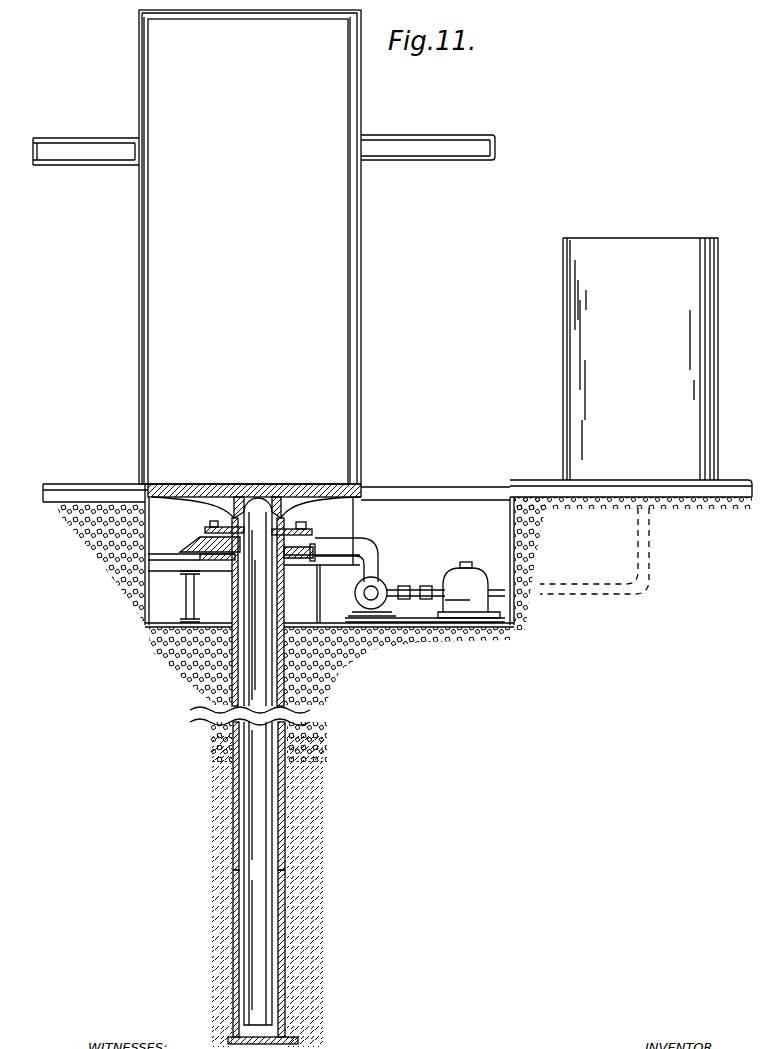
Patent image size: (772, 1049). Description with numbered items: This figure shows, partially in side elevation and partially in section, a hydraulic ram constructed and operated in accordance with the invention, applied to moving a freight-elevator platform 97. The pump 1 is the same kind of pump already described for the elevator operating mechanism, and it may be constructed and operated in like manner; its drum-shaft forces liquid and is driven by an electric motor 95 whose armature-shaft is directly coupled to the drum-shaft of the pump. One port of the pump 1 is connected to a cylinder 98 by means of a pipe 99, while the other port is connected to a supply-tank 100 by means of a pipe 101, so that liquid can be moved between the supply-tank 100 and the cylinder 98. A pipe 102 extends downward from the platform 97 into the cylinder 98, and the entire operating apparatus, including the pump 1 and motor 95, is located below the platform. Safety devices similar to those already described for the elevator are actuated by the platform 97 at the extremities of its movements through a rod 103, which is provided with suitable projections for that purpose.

The rod 103 is at (264, 247).
The supply-tank 100 is at (640, 359).
The freight-elevator platform 97 is at (257, 492).
The pipe 102 is at (300, 714).
The cylinder 98 is at (298, 878).
The pipe 99 is at (370, 549).
The pump 1 is at (381, 584).
The electric motor 95 is at (468, 578).
The pipe 101 is at (600, 590).